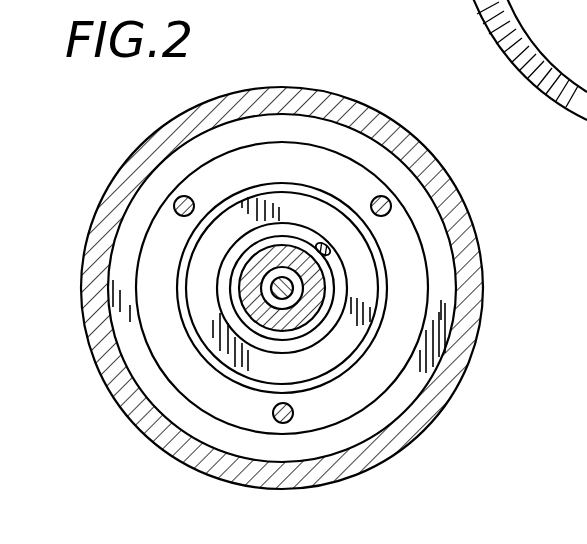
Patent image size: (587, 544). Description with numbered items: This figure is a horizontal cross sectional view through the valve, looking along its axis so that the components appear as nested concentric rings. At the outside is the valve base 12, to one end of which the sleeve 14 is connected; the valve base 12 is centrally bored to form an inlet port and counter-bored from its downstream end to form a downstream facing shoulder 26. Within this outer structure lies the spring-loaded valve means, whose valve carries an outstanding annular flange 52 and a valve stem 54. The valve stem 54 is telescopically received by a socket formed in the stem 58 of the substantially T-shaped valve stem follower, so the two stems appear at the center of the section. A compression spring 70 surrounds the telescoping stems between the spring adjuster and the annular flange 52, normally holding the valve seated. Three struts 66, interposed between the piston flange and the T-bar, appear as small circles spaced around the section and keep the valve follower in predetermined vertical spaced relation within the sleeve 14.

The valve base 12 is at (227, 135).
The sleeve 14 is at (142, 150).
The downstream facing shoulder 26 is at (443, 265).
The annular flange 52 is at (193, 370).
The valve stem 54 is at (268, 293).
The stem 58 is at (300, 313).
The struts 66 is at (172, 212).
The compression spring 70 is at (313, 240).